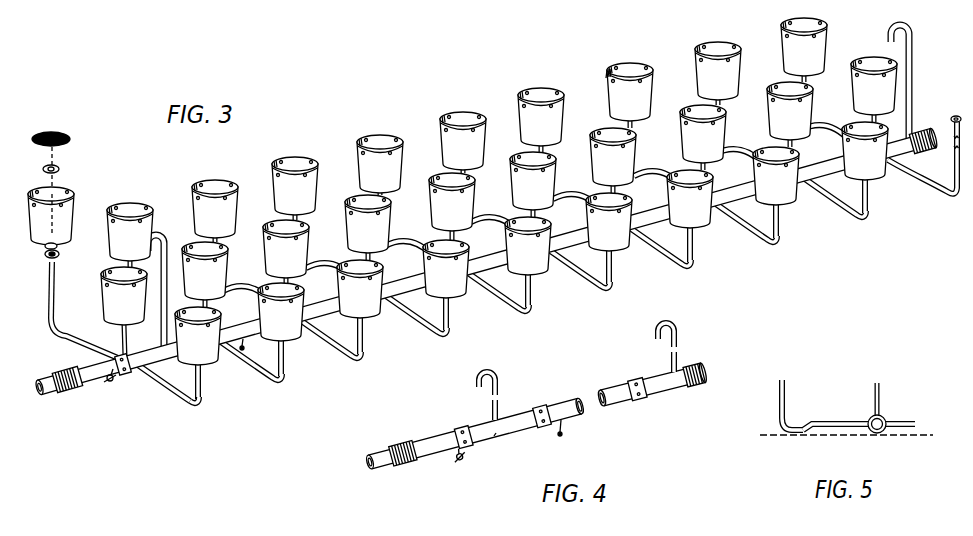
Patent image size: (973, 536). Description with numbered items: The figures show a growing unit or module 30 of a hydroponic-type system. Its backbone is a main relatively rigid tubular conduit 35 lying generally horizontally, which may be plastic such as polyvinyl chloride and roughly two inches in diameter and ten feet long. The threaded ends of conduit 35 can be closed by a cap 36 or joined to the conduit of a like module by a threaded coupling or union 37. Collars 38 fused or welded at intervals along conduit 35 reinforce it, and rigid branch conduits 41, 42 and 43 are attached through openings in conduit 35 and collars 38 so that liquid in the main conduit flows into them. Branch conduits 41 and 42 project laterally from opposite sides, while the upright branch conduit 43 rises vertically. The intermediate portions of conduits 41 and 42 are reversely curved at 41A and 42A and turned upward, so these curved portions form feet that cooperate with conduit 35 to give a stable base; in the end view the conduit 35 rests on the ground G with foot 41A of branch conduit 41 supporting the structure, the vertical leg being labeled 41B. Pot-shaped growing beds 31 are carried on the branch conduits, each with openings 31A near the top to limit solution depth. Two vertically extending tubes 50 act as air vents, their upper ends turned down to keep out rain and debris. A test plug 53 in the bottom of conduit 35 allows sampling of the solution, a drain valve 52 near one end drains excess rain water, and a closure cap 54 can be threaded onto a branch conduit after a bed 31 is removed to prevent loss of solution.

In FIG. 3, the module 30 is at (408, 287).
In FIG. 3, the growing bed 31 is at (441, 133).
In FIG. 3, the opening 31A is at (607, 76).
In FIG. 3, the main tubular conduit 35 is at (322, 312).
In FIG. 4, the main tubular conduit 35 is at (496, 433).
In FIG. 5, the main tubular conduit 35 is at (888, 417).
In FIG. 3, the cap 36 is at (930, 123).
In FIG. 4, the cap 36 is at (695, 368).
In FIG. 3, the threaded coupling or union 37 is at (63, 398).
In FIG. 4, the threaded coupling or union 37 is at (403, 464).
In FIG. 3, the collar 38 is at (129, 372).
In FIG. 4, the collar 38 is at (633, 380).
In FIG. 3, the branch conduit 41 is at (70, 332).
In FIG. 5, the branch conduit 41 is at (824, 421).
In FIG. 3, the curved portion (foot) 41A is at (51, 329).
In FIG. 5, the curved portion (foot) 41A is at (790, 438).
In FIG. 5, the leg of tube 41B is at (779, 393).
In FIG. 3, the branch conduit 42 is at (217, 348).
In FIG. 3, the curved portion (foot) 42A is at (188, 405).
In FIG. 3, the upright branch conduit 43 is at (121, 329).
In FIG. 5, the upright branch conduit 43 is at (881, 396).
In FIG. 3, the vertically extending tube 50 is at (164, 234).
In FIG. 4, the vertically extending tube 50 is at (675, 331).
In FIG. 3, the drain valve 52 is at (109, 382).
In FIG. 3, the test plug 53 is at (240, 347).
In FIG. 3, the closure cap 54 is at (955, 114).
In FIG. 5, the ground G is at (918, 436).